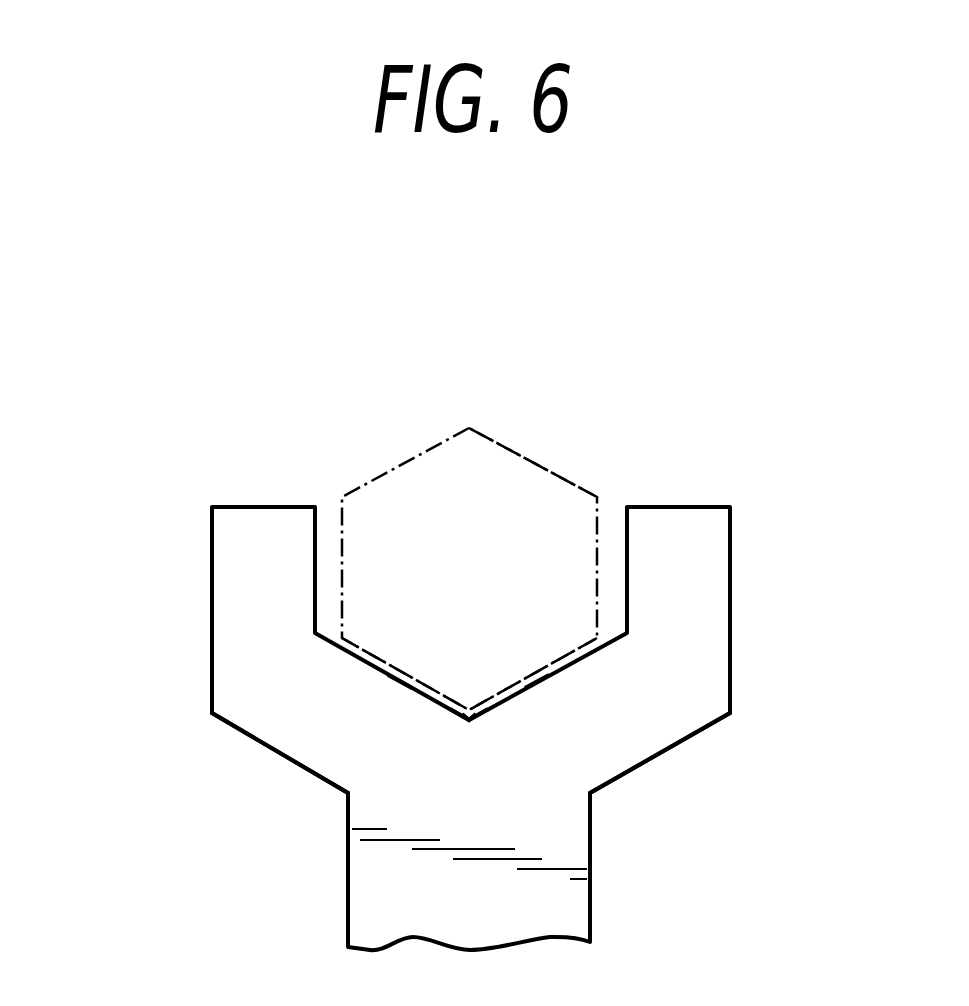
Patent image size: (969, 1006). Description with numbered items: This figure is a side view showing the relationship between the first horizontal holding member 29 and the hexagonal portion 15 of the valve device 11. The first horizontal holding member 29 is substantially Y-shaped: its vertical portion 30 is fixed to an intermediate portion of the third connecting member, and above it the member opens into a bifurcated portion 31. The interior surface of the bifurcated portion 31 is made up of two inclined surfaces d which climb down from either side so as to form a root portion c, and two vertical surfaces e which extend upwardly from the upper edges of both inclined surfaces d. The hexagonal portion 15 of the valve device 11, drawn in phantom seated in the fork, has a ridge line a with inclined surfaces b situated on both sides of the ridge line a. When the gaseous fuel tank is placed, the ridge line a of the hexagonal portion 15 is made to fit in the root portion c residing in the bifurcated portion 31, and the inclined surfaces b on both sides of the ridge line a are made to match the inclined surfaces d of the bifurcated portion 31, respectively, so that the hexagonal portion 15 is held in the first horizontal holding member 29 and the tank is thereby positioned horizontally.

The valve device 11 is at (428, 428).
The hexagonal portion 15 is at (512, 452).
The first horizontal holding member 29 is at (180, 655).
The vertical portion 30 is at (372, 893).
The bifurcated portion 31 is at (760, 602).
The ridge line a is at (477, 720).
The inclined surfaces b is at (378, 675).
The root portion c is at (462, 709).
The inclined surfaces d is at (400, 678).
The vertical surfaces e is at (318, 557).